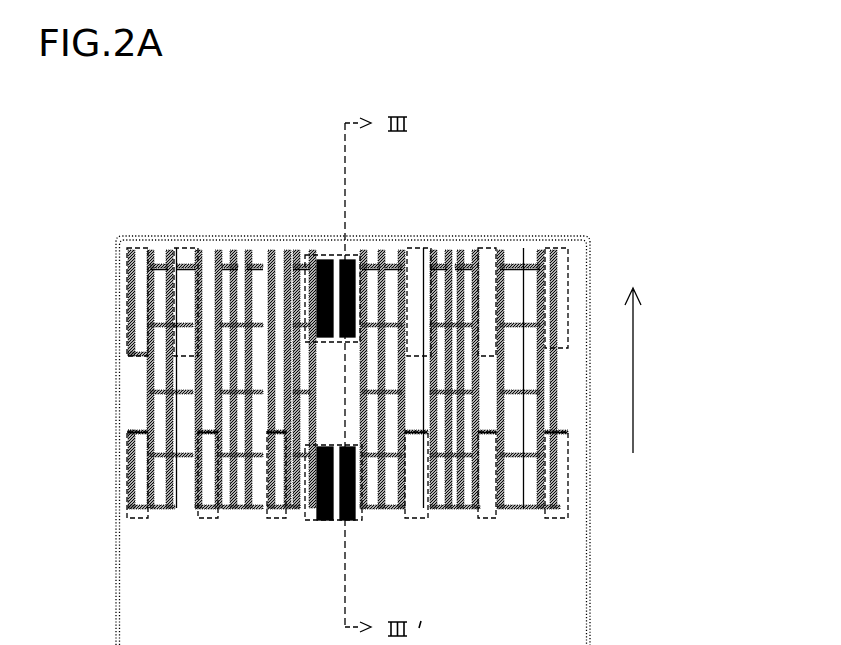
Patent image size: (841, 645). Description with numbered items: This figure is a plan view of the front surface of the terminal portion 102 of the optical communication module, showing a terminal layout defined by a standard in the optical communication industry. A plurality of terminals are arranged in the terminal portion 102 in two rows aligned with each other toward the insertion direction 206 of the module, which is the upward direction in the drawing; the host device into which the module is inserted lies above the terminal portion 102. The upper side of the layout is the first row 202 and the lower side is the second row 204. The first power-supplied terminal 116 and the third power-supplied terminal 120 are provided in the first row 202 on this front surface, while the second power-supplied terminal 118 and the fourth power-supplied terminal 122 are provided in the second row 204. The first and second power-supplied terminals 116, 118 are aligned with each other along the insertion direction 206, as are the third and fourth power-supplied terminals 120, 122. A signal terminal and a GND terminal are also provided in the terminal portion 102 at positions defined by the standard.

The terminal portion 102 is at (165, 236).
The first power-supplied terminal 116 is at (345, 261).
The second power-supplied terminal 118 is at (347, 519).
The third power-supplied terminal 120 is at (322, 261).
The fourth power-supplied terminal 122 is at (322, 519).
The first row 202 is at (127, 335).
The second row 204 is at (127, 484).
The insertion direction 206 is at (633, 395).